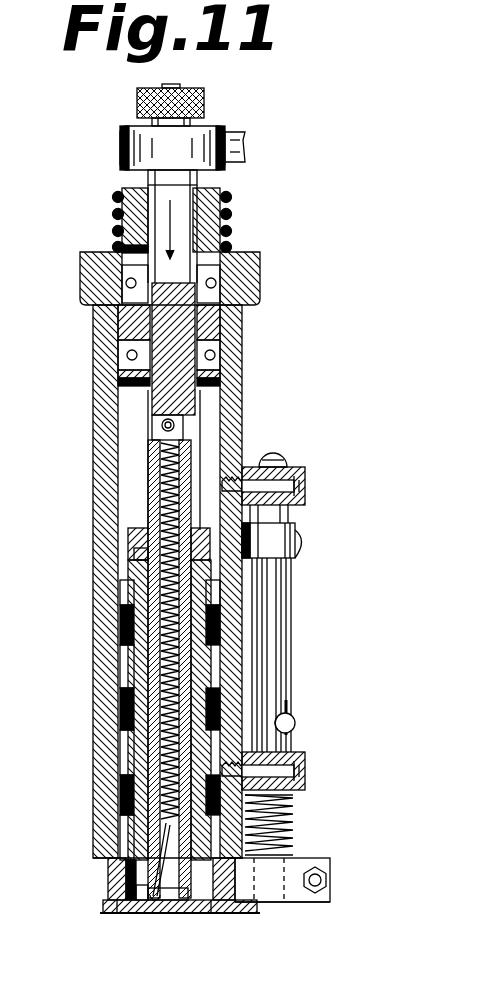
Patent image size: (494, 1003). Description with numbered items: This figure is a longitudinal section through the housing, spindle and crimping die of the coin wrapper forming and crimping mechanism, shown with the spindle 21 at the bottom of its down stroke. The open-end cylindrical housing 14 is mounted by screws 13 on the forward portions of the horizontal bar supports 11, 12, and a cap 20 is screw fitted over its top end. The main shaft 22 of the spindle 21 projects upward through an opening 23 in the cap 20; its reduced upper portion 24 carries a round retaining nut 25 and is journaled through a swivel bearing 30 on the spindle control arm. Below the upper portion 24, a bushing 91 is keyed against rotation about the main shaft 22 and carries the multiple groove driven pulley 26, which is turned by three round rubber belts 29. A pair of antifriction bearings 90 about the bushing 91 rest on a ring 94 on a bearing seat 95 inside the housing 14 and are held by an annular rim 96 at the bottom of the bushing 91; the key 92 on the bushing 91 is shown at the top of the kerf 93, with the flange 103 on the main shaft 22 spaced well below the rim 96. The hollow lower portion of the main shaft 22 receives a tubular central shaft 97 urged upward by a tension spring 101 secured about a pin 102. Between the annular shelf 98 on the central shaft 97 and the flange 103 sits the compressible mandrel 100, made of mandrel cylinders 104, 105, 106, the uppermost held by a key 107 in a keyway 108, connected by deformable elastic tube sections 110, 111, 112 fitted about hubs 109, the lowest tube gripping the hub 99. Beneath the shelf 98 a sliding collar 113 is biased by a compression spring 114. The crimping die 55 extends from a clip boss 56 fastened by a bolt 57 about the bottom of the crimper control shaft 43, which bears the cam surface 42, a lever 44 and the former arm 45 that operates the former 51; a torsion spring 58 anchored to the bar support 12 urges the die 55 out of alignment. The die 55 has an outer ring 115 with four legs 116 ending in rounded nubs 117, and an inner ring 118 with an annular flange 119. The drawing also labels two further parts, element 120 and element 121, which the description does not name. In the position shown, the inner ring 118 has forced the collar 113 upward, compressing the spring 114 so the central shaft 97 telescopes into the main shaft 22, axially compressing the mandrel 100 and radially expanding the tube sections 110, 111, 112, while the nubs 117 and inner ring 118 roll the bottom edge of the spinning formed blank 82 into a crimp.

The horizontal bar support 11 is at (296, 470).
The horizontal bar support 12 is at (306, 756).
The screws 13 is at (306, 478).
The cylindrical housing 14 is at (95, 340).
The cap 20 is at (259, 267).
The spindle 21 is at (146, 181).
The main shaft 22 is at (182, 186).
The opening 23 is at (123, 250).
The reduced upper portion 24 is at (170, 86).
The retaining nut 25 is at (137, 100).
The driven pulley 26 is at (228, 198).
The rubber belts 29 is at (120, 198).
The swivel bearing 30 is at (238, 143).
The cam surface 42 is at (297, 530).
The crimper control shaft 43 is at (292, 680).
The lever 44 is at (297, 725).
The former arm 45 is at (292, 713).
The former 51 is at (130, 612).
The crimping die 55 is at (256, 905).
The clip boss 56 is at (298, 905).
The bolt 57 is at (328, 878).
The torsion spring 58 is at (292, 838).
The formed blank 82 is at (262, 598).
The antifriction bearings 90 is at (246, 284).
The bushing 91 is at (217, 224).
The key 92 is at (150, 400).
The kerf 93 is at (148, 410).
The ring 94 is at (216, 385).
The bearing seat 95 is at (112, 385).
The annular rim 96 is at (216, 405).
The central shaft 97 is at (177, 912).
The annular shelf 98 is at (125, 862).
The hub 99 is at (135, 835).
The compressible mandrel 100 is at (140, 735).
The tension spring 101 is at (172, 680).
The pin 102 is at (176, 424).
The flange 103 is at (130, 540).
The mandrel cylinder 104 is at (142, 565).
The mandrel cylinder 105 is at (142, 700).
The mandrel cylinder 106 is at (140, 790).
The key 107 is at (132, 598).
The keyway 108 is at (138, 548).
The hubs 109 is at (136, 625).
The deformable elastic tube section 110 is at (265, 628).
The deformable elastic tube section 111 is at (266, 700).
The deformable elastic tube section 112 is at (135, 822).
The sliding collar 113 is at (125, 880).
The compression spring 114 is at (272, 880).
The outer ring 115 is at (130, 857).
The legs 116 is at (125, 898).
The nubs 117 is at (117, 915).
The inner ring 118 is at (200, 915).
The annular flange 119 is at (105, 912).
The guide 120 is at (262, 580).
The wire 121 is at (143, 915).